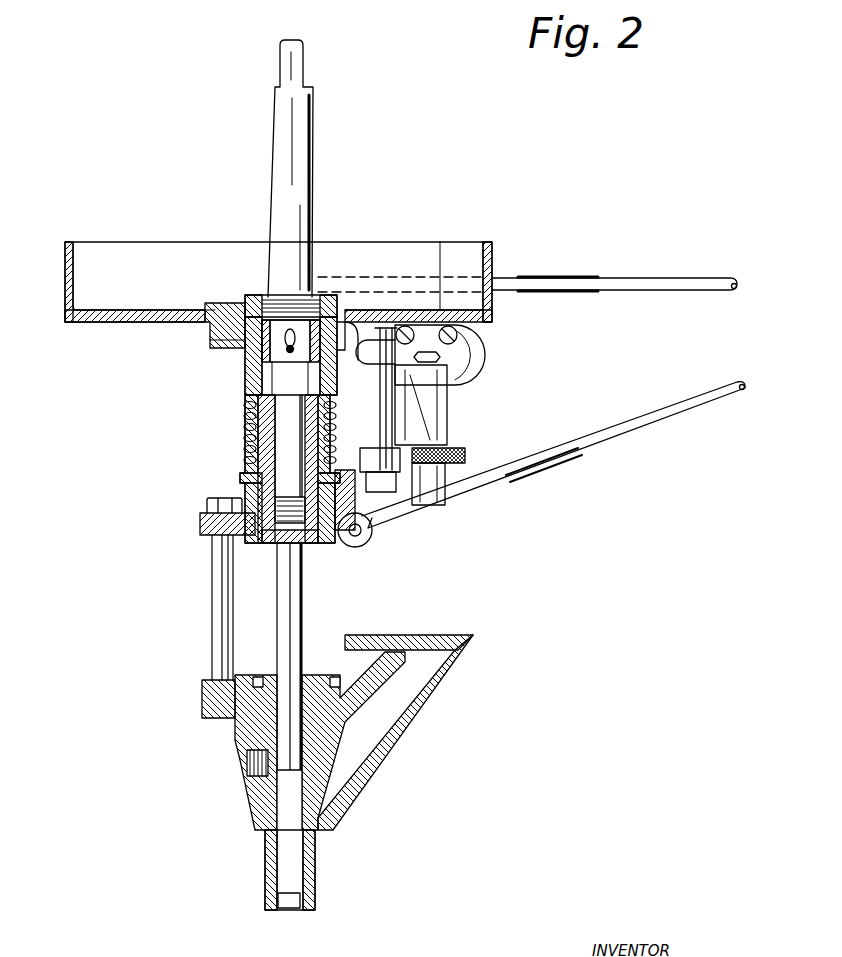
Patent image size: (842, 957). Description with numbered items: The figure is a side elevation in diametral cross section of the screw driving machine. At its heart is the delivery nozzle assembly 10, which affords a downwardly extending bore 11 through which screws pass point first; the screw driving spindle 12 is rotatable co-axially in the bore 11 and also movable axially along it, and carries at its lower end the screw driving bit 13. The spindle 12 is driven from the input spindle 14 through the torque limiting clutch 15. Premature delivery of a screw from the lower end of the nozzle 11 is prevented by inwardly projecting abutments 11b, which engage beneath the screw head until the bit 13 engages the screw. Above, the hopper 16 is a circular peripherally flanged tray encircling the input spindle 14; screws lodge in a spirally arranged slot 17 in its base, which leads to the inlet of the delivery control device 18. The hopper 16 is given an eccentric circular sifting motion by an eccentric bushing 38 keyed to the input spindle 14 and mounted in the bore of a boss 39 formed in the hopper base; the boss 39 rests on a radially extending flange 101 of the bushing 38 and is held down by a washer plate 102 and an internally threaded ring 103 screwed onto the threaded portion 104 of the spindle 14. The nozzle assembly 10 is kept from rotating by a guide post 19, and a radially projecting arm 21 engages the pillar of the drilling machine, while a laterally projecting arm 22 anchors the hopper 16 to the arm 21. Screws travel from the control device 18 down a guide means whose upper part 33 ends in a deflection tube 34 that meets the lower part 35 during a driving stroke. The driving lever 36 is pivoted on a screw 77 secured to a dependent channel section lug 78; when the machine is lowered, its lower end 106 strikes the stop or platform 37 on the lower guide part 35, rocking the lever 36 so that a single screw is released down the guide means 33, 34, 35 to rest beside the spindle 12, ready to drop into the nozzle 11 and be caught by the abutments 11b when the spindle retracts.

The delivery nozzle assembly 10 is at (232, 752).
The bore 11 is at (288, 850).
The inwardly projecting abutments 11b is at (290, 898).
The screw driving spindle 12 is at (290, 600).
The screw driving bit 13 is at (265, 770).
The input spindle 14 is at (300, 135).
The torque limiting clutch 15 is at (237, 462).
The hopper 16 is at (490, 245).
The spirally arranged slot 17 is at (425, 318).
The delivery control device 18 is at (495, 338).
The guide post 19 is at (213, 600).
The radially projecting arm 21 is at (620, 433).
The laterally projecting arm 22 is at (620, 288).
The upper part of the guide means 33 is at (478, 390).
The deflection tube 34 is at (470, 468).
The lower part of the guide means 35 is at (410, 720).
The driving lever 36 is at (378, 426).
The stop or platform 37 is at (368, 635).
The eccentric bushing 38 is at (245, 340).
The boss 39 is at (205, 328).
The screw 77 is at (353, 508).
The dependent channel section lug 78 is at (450, 412).
The radially extending flange 101 is at (210, 345).
The washer plate 102 is at (214, 302).
The internally threaded ring 103 is at (256, 295).
The threaded portion of the spindle 104 is at (318, 297).
The lower end of the driving lever 106 is at (385, 473).